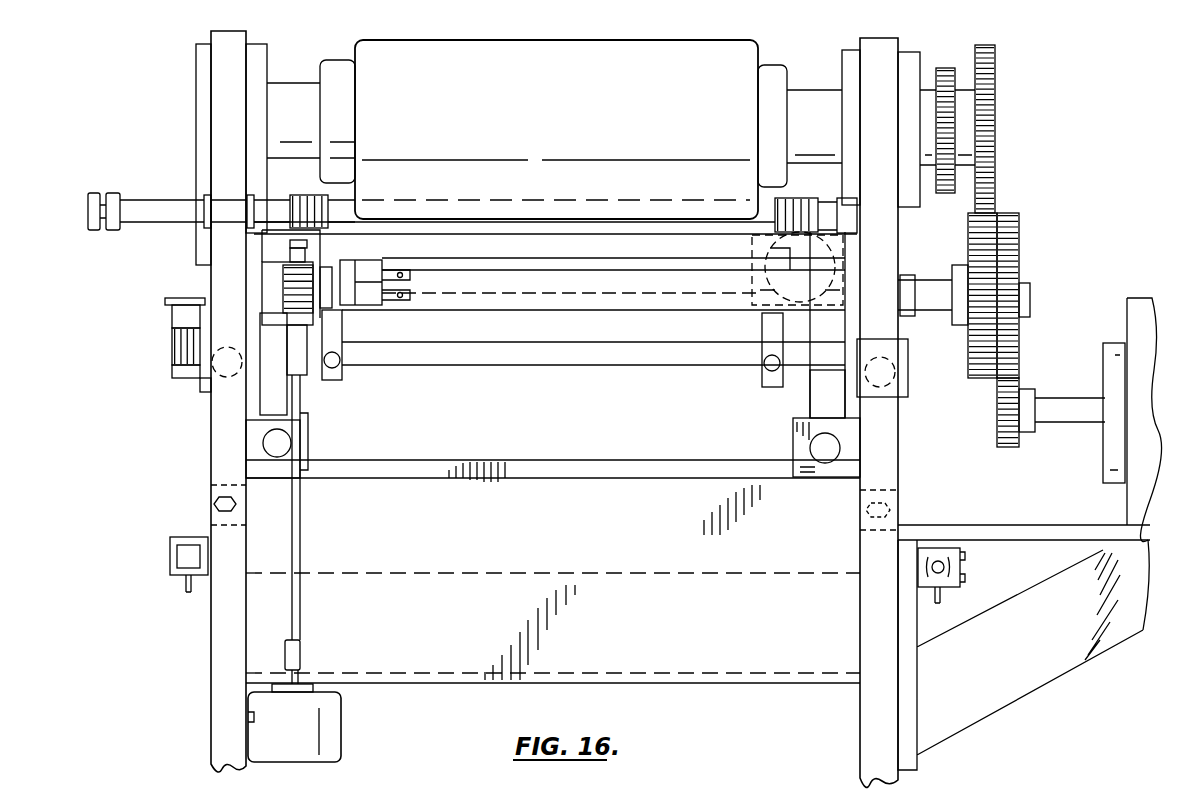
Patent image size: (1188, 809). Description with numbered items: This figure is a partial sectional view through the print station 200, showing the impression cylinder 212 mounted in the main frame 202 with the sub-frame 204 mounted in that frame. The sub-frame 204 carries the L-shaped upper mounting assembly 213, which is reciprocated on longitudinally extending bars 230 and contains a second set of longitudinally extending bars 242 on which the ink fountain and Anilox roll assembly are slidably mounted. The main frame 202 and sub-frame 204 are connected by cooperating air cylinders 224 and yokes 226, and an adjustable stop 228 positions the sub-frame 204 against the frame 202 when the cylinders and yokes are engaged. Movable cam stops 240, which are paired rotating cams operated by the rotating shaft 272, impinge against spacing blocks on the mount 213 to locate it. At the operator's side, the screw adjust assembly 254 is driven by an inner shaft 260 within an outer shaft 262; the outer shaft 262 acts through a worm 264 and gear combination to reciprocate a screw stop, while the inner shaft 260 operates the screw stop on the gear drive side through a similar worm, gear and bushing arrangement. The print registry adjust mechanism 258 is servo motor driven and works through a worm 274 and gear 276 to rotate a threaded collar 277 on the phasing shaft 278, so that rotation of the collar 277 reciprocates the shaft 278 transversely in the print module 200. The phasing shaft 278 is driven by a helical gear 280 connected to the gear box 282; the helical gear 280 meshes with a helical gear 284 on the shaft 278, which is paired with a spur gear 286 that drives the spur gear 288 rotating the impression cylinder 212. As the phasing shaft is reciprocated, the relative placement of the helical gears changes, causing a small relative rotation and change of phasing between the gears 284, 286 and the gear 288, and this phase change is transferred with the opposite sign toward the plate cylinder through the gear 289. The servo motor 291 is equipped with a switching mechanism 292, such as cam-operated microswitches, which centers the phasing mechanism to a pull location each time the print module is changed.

The print station 200 is at (197, 719).
The main frame 202 is at (215, 660).
The sub-frame 204 is at (211, 768).
The impression cylinder 212 is at (588, 52).
The L-shaped upper mounting assembly 213 is at (306, 398).
The air cylinder 224 is at (166, 562).
The yoke 226 is at (172, 545).
The adjustable stop 228 is at (214, 505).
The longitudinally extending bars 230 is at (263, 442).
The movable cam stops 240 is at (342, 331).
The second set of longitudinally extending bars 242 is at (218, 400).
The screw adjust assembly 254 is at (98, 246).
The print registry adjust mechanism 258 is at (322, 401).
The inner shaft 260 is at (88, 213).
The outer shaft 262 is at (145, 198).
The worm 264 is at (308, 182).
The rotating shaft 272 is at (595, 363).
The worm 274 is at (283, 270).
The gear 276 is at (290, 244).
The threaded collar 277 is at (266, 284).
The phasing shaft 278 is at (507, 305).
The helical gear 280 is at (1000, 420).
The gear box 282 is at (1138, 305).
The helical gear 284 is at (1019, 246).
The spur gear 286 is at (968, 235).
The spur gear 288 is at (996, 90).
The gear 289 is at (940, 68).
The servo motor 291 is at (330, 740).
The switching mechanism 292 is at (379, 262).